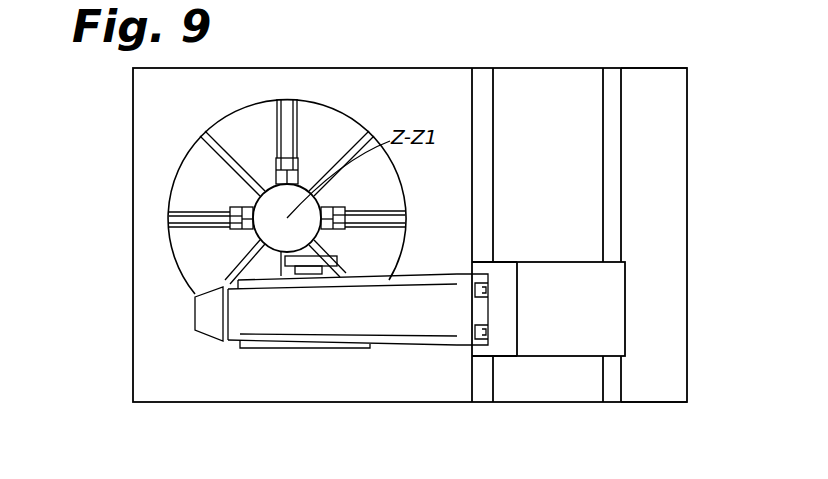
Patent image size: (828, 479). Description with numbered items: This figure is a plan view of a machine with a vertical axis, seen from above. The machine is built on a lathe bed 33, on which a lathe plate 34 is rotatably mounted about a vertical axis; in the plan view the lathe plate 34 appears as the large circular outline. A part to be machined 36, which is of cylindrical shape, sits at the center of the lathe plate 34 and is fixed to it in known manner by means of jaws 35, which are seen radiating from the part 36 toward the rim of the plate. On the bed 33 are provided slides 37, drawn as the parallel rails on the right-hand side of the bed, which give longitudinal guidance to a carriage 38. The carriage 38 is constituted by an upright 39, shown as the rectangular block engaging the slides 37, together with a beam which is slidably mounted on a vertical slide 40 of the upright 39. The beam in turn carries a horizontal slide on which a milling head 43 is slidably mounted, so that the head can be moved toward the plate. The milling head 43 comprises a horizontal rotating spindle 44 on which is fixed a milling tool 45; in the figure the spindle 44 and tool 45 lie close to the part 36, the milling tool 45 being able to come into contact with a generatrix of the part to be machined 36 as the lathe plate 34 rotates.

The lathe bed 33 is at (288, 384).
The lathe plate 34 is at (181, 174).
The jaws 35 is at (277, 170).
The part to be machined 36 is at (295, 194).
The slides 37 is at (611, 73).
The carriage 38 is at (628, 308).
The upright 39 is at (478, 308).
The vertical slide 40 is at (358, 311).
The milling head 43 is at (262, 345).
The horizontal rotating spindle 44 is at (278, 268).
The milling tool 45 is at (325, 261).